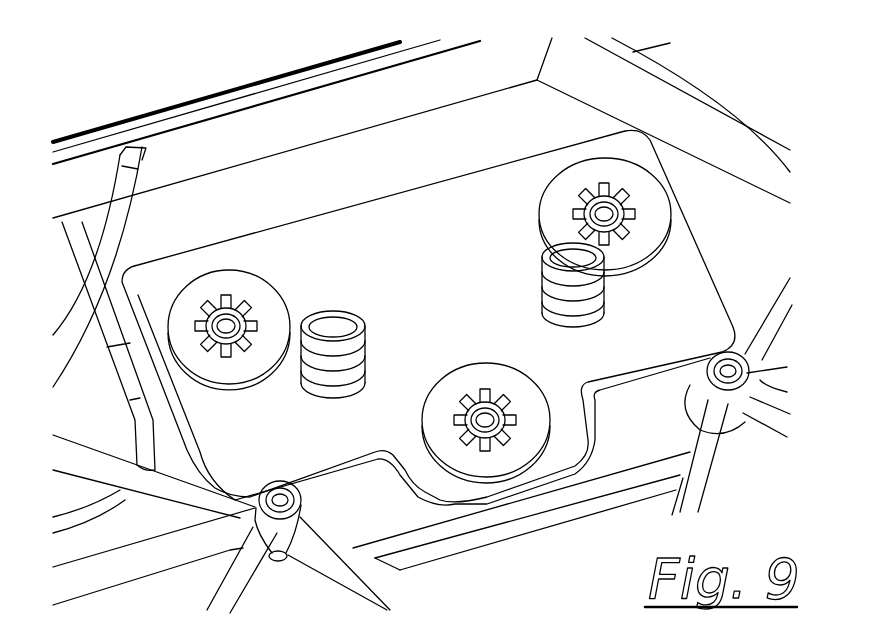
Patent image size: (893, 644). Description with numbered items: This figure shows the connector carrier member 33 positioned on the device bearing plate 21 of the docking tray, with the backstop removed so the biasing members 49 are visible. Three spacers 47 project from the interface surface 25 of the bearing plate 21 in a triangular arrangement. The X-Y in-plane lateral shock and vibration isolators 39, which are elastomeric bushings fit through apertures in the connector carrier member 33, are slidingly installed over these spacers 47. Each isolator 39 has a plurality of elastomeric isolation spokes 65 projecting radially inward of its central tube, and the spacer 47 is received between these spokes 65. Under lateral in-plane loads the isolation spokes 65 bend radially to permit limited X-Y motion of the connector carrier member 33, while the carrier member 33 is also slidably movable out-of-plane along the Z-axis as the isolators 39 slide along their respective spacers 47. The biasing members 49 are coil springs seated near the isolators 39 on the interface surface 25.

The device bearing plate 21 is at (295, 183).
The interface surface 25 is at (401, 179).
The connector carrier member 33 is at (452, 280).
The in-plane isolator 39 is at (205, 285).
The spacer 47 is at (623, 192).
The biasing member 49 is at (546, 262).
The elastomeric isolation spoke 65 is at (475, 397).